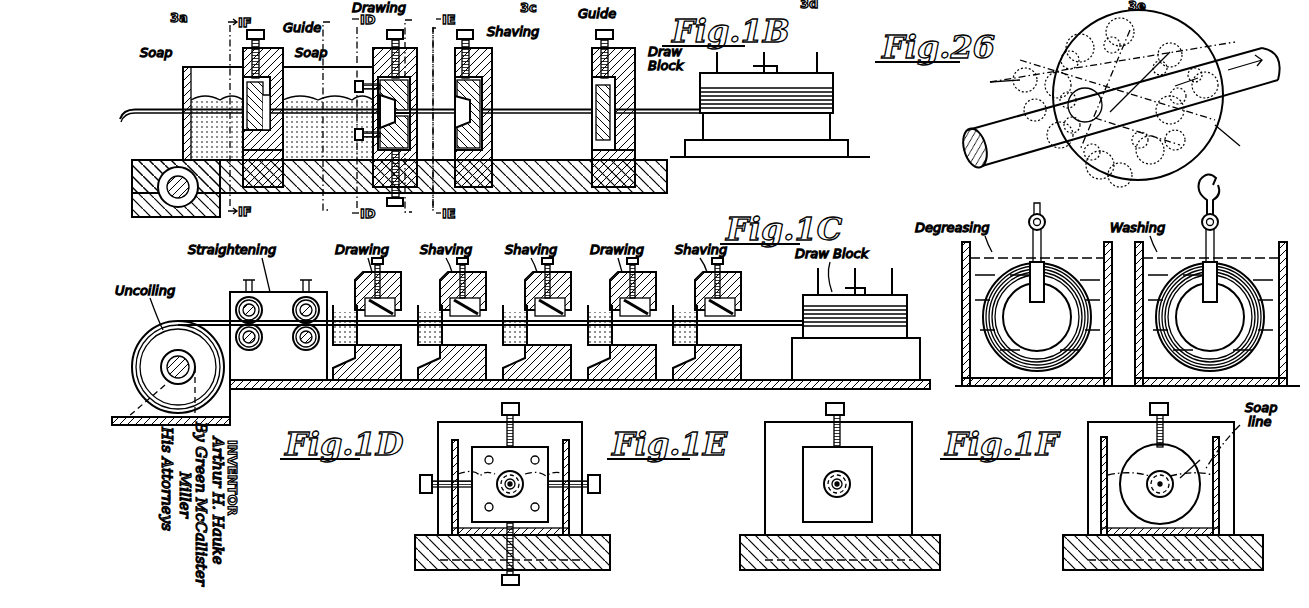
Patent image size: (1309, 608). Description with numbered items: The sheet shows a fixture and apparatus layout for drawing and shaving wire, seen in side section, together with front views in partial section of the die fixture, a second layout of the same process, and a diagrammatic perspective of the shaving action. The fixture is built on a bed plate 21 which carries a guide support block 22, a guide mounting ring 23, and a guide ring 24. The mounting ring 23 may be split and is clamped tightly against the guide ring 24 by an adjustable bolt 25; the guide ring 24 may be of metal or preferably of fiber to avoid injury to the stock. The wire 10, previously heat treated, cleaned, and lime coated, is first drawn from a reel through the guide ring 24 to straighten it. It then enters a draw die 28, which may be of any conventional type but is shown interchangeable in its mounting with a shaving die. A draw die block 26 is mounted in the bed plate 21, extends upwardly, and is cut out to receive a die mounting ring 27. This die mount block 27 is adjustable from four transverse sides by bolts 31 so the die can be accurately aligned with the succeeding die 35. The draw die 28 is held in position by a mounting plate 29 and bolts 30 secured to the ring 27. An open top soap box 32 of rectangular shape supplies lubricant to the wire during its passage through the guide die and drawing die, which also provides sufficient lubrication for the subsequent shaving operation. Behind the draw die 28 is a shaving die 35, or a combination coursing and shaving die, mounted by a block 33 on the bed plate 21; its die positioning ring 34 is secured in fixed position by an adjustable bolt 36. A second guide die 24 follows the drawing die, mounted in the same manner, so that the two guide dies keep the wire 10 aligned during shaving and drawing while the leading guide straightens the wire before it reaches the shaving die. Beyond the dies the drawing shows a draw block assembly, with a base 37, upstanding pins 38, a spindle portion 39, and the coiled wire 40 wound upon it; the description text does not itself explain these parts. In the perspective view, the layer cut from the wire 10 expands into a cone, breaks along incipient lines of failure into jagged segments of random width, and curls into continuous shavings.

In FIG. 1B, the wire 10 is at (146, 108).
In FIG. 26, the wire 10 is at (1232, 50).
In FIG. 1D, the wire 10 is at (513, 486).
In FIG. 1E, the wire 10 is at (837, 484).
In FIG. 1F, the wire 10 is at (1158, 485).
In FIG. 1B, the bed plate 21 is at (352, 182).
In FIG. 1D, the bed plate 21 is at (415, 552).
In FIG. 1E, the bed plate 21 is at (740, 552).
In FIG. 1F, the bed plate 21 is at (1063, 552).
In FIG. 1B, the guide support block 22 is at (278, 178).
In FIG. 1F, the guide support block 22 is at (1234, 445).
In FIG. 1B, the guide mounting ring 23 is at (243, 85).
In FIG. 1F, the guide mounting ring 23 is at (1140, 498).
In FIG. 1B, the guide ring 24 is at (270, 95).
In FIG. 1F, the guide ring 24 is at (1173, 485).
In FIG. 1B, the adjustable bolt 25 is at (262, 34).
In FIG. 1F, the adjustable bolt 25 is at (1168, 408).
In FIG. 1B, the draw die block 26 is at (395, 188).
In FIG. 1D, the draw die block 26 is at (438, 458).
In FIG. 1B, the die mounting ring 27 is at (410, 85).
In FIG. 1B, the draw die 28 is at (410, 128).
In FIG. 1E, the draw die 28 is at (833, 488).
In FIG. 1D, the mounting plate 29 is at (485, 495).
In FIG. 1B, the bolts 30 is at (380, 95).
In FIG. 1D, the bolts 30 is at (486, 457).
In FIG. 1B, the bolts 31 is at (400, 34).
In FIG. 1D, the bolts 31 is at (502, 408).
In FIG. 1B, the soap box 32 is at (183, 128).
In FIG. 1D, the soap box 32 is at (565, 440).
In FIG. 1F, the soap box 32 is at (1107, 440).
In FIG. 1B, the block 33 is at (480, 172).
In FIG. 1E, the block 33 is at (912, 483).
In FIG. 1B, the die positioning ring 34 is at (480, 128).
In FIG. 1E, the die positioning ring 34 is at (872, 502).
In FIG. 1B, the shaving die 35 is at (470, 100).
In FIG. 1D, the shaving die 35 is at (512, 486).
In FIG. 1B, the adjustable bolt 36 is at (456, 53).
In FIG. 1E, the adjustable bolt 36 is at (844, 408).
In FIG. 1B, the draw block base 37 is at (685, 148).
In FIG. 1B, the draw block pins 38 is at (770, 68).
In FIG. 1B, the draw block spindle 39 is at (703, 128).
In FIG. 1B, the wire coil on draw block 40 is at (833, 100).
In FIG. 26, the wire coil on draw block 40 is at (1222, 105).